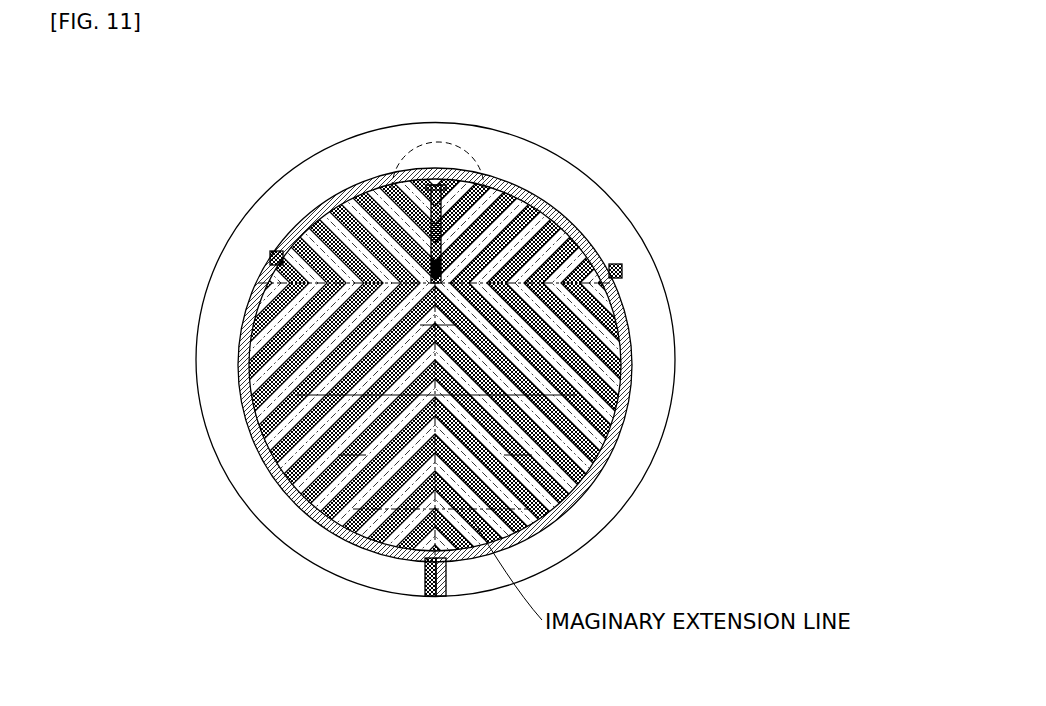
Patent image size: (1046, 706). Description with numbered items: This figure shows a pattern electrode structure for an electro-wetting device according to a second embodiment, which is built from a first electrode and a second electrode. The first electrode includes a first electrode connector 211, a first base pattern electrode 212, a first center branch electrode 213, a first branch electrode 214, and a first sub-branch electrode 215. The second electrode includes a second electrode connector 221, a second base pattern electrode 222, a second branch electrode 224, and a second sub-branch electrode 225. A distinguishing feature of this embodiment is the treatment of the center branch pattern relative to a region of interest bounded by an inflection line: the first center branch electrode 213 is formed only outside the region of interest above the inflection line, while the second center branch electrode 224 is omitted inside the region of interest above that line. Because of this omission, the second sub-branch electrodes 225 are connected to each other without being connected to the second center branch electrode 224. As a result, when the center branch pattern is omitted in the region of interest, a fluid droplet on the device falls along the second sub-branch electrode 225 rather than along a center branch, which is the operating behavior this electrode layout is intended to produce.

The first electrode connector 211 is at (422, 590).
The first base pattern electrode 212 is at (293, 210).
The first center branch electrode 213 is at (453, 176).
The first branch electrode 214 is at (366, 262).
The first sub-branch electrode 215 is at (483, 198).
The second electrode connector 221 is at (437, 590).
The second base pattern electrode 222 is at (612, 302).
The second center branch electrode 224 is at (576, 346).
The second sub-branch electrode 225 is at (566, 488).